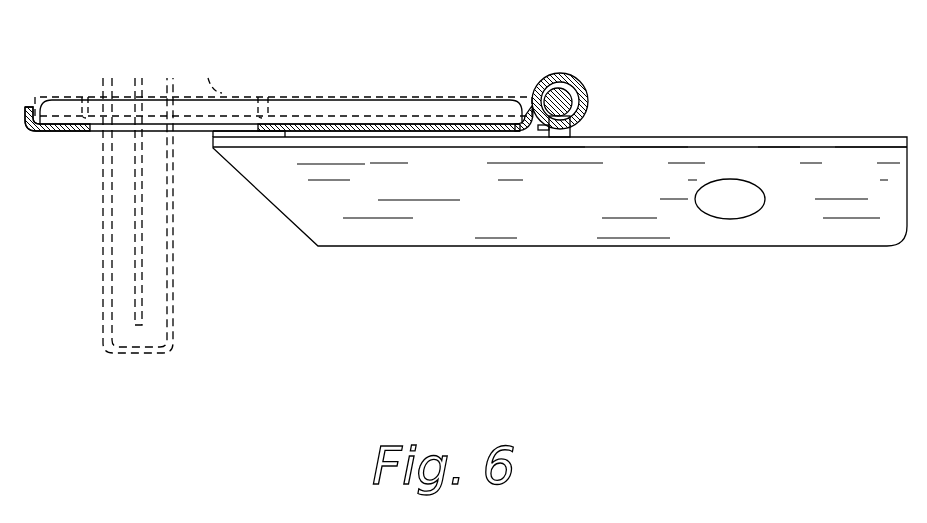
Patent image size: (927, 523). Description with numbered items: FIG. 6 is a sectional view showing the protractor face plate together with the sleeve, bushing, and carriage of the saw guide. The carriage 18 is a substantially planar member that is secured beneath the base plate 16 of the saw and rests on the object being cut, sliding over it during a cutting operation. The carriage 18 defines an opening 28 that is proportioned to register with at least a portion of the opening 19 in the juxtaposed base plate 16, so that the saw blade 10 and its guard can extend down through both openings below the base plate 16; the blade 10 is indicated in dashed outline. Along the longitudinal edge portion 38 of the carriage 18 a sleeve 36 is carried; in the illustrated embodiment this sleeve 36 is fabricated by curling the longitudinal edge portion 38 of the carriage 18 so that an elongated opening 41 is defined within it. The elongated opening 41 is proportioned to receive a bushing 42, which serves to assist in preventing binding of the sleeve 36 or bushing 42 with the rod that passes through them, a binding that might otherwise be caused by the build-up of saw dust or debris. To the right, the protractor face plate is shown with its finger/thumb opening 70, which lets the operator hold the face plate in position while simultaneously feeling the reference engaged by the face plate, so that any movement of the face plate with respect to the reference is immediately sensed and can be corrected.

The saw blade 10 is at (147, 250).
The base plate 16 is at (329, 118).
The carriage 18 is at (378, 131).
The opening in base plate 19 is at (255, 117).
The opening in carriage 28 is at (257, 125).
The sleeve 36 is at (572, 125).
The longitudinal edge portion 38 is at (565, 66).
The elongated opening 41 is at (531, 96).
The bushing 42 is at (587, 102).
The finger/thumb opening 70 is at (745, 214).